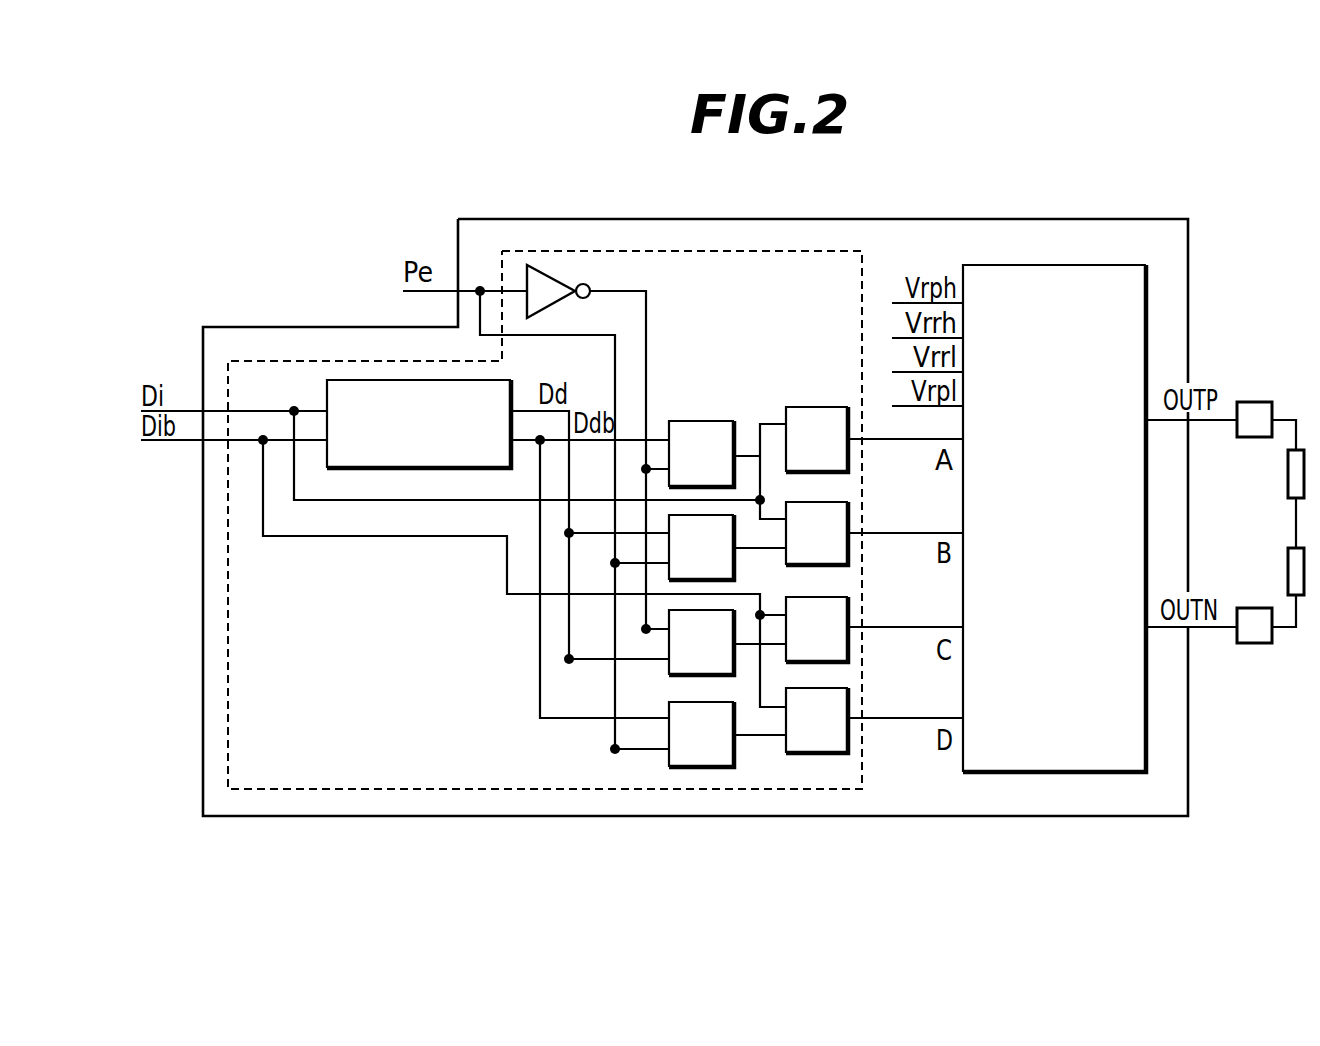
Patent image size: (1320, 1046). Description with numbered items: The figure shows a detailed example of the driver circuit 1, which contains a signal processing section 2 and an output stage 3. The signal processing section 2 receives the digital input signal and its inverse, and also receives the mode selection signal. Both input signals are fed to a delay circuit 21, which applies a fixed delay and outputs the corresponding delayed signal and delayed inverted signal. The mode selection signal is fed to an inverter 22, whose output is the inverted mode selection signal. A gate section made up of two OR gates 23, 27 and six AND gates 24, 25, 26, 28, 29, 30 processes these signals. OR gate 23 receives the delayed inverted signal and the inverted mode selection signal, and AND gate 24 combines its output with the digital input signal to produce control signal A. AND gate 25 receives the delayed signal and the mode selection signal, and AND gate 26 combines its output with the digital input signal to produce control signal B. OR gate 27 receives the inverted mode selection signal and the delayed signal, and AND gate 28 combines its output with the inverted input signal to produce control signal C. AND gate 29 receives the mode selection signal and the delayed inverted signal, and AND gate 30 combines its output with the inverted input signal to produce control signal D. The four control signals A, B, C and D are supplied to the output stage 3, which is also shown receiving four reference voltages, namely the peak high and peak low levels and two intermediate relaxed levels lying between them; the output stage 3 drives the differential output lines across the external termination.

The circuit 1 is at (1172, 218).
The signal processing section 2 is at (873, 239).
The output stage 3 is at (1132, 263).
The delay circuit 21 is at (327, 387).
The inverter 22 is at (570, 282).
The OR gate 23 is at (686, 420).
The AND gate 24 is at (793, 406).
The AND gate 25 is at (736, 563).
The AND gate 26 is at (850, 512).
The OR gate 27 is at (677, 678).
The AND gate 28 is at (850, 606).
The AND gate 29 is at (672, 760).
The AND gate 30 is at (850, 700).